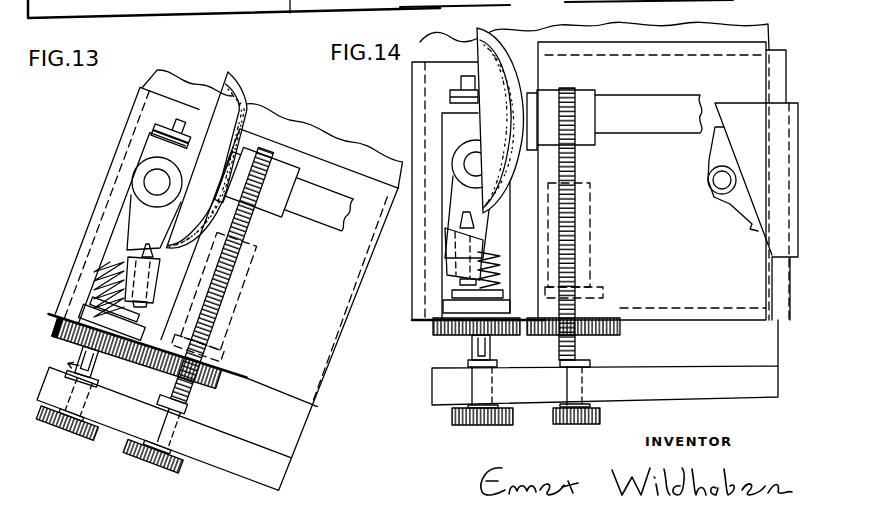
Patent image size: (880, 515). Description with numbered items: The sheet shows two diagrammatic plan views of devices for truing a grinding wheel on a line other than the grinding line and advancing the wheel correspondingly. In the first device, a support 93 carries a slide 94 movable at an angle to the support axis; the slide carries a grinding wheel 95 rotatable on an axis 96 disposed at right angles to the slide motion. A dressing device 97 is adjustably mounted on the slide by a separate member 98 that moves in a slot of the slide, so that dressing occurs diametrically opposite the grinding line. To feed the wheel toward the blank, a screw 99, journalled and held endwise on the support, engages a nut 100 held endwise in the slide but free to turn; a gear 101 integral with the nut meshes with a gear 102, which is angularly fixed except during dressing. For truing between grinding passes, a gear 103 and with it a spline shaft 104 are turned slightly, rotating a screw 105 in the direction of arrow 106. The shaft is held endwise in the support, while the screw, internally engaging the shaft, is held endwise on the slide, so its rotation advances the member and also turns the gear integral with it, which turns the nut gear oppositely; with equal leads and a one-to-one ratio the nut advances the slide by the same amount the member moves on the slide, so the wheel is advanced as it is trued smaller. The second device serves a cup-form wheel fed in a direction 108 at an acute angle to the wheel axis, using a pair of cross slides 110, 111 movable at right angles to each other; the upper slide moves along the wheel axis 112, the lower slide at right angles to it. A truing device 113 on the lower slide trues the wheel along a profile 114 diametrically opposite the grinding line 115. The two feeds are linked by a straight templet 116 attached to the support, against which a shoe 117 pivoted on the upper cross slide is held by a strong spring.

In FIG. 13, the support 93 is at (282, 438).
In FIG. 14, the support 93 is at (760, 344).
In FIG. 13, the slide 94 is at (298, 377).
In FIG. 13, the grinding wheel 95 is at (246, 106).
In FIG. 13, the axis 96 is at (312, 200).
In FIG. 13, the device 97 is at (143, 218).
In FIG. 13, the member 98 is at (147, 242).
In FIG. 13, the screw 99 is at (174, 407).
In FIG. 14, the screw 99 is at (584, 352).
In FIG. 13, the nut 100 is at (212, 321).
In FIG. 14, the nut 100 is at (586, 265).
In FIG. 13, the gear 101 is at (188, 363).
In FIG. 13, the gear 102 is at (60, 322).
In FIG. 13, the gear 103 is at (70, 428).
In FIG. 13, the spline shaft 104 is at (87, 357).
In FIG. 13, the screw 105 is at (100, 279).
In FIG. 14, the screw 105 is at (454, 78).
In FIG. 13, the arrow 106 is at (97, 373).
In FIG. 14, the direction 108 is at (513, 72).
In FIG. 14, the cross slide 110 is at (435, 296).
In FIG. 14, the cross slide 111 is at (700, 320).
In FIG. 14, the axis 112 is at (645, 118).
In FIG. 14, the device 113 is at (452, 258).
In FIG. 14, the profile 114 is at (447, 200).
In FIG. 14, the grinding line 115 is at (494, 38).
In FIG. 14, the templet 116 is at (747, 133).
In FIG. 14, the shoe 117 is at (737, 200).